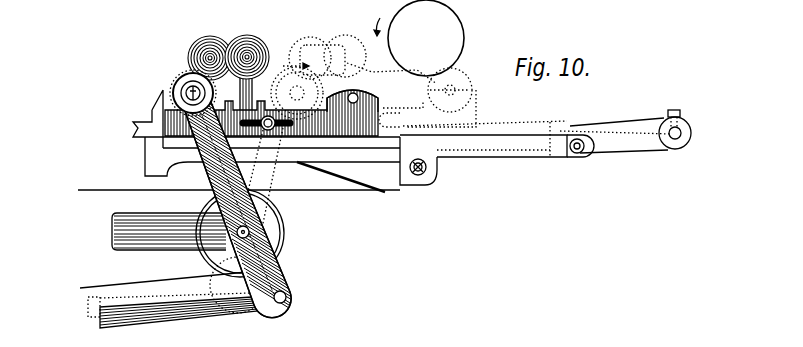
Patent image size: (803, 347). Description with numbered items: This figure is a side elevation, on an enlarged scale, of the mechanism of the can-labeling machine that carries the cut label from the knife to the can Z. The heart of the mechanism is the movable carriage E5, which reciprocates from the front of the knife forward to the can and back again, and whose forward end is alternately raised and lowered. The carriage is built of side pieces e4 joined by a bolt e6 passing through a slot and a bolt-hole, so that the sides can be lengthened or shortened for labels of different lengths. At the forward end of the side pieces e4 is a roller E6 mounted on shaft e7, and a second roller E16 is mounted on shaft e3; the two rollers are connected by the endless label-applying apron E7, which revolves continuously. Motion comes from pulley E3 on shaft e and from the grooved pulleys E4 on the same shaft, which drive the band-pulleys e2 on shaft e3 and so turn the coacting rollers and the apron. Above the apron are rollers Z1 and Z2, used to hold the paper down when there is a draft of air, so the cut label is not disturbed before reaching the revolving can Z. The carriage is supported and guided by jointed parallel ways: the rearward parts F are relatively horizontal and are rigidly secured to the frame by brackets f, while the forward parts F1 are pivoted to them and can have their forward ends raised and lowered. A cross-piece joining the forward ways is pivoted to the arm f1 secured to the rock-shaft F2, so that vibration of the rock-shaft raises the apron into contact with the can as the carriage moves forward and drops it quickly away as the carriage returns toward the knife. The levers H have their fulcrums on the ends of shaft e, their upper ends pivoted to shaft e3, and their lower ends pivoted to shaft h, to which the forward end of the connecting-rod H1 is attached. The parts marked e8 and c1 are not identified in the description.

The can Z is at (426, 38).
The roller Z1 is at (208, 44).
The roller Z2 is at (245, 43).
The endless apron E7 is at (267, 72).
The roller E6 is at (172, 82).
The band-pulleys e2 is at (182, 73).
The shaft e3 is at (178, 97).
The shaft e7 is at (353, 97).
The second roller E16 is at (360, 87).
The bolt e6 is at (275, 135).
The side pieces e4 is at (343, 130).
The movable carriage E5 is at (298, 162).
The guide e8 is at (205, 148).
The grooved pulleys E4 is at (263, 215).
The pulley E3 is at (283, 237).
The shaft e is at (230, 237).
The shaft h is at (293, 297).
The levers H is at (235, 197).
The connecting-rod H1 is at (173, 307).
The rollers c' c1 is at (169, 231).
The rearward parts of ways F is at (257, 140).
The forward parts of ways F1 is at (483, 146).
The arm f1 is at (617, 137).
The rock-shaft F2 is at (691, 133).
The brackets f is at (381, 22).